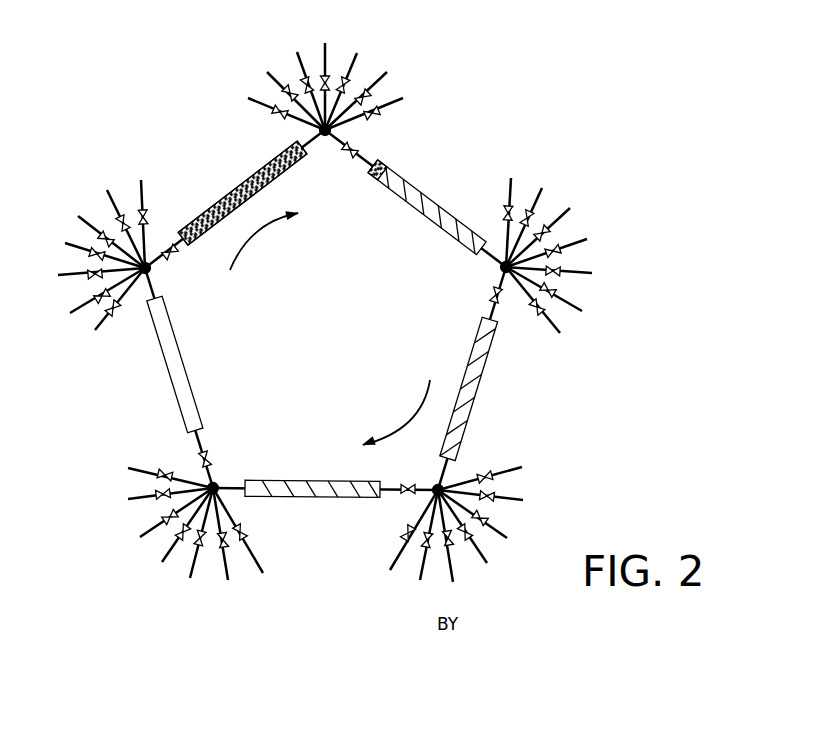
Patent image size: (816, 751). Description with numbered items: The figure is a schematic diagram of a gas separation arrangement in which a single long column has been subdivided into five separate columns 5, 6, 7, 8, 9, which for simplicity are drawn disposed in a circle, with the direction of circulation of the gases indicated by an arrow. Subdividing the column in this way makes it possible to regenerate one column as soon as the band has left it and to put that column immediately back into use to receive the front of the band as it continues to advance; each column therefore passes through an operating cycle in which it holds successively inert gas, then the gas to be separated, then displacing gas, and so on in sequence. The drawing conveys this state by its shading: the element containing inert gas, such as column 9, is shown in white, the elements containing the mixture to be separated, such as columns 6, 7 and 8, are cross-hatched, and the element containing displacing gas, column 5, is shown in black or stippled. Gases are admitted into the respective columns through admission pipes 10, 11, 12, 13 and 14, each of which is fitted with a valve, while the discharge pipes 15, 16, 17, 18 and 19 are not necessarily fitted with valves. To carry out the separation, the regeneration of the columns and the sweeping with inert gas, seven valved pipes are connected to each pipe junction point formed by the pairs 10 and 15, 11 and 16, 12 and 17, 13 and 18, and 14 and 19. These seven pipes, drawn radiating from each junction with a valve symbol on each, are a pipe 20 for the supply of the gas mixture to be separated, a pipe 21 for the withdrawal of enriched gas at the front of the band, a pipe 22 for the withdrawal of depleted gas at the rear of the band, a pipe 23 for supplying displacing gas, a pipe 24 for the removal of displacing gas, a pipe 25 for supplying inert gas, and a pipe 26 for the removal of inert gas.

The column 5 is at (248, 176).
The column 6 is at (418, 180).
The column 7 is at (478, 405).
The column 8 is at (316, 502).
The column 9 is at (168, 390).
The admission pipe 10 is at (174, 256).
The admission pipe 11 is at (351, 155).
The admission pipe 12 is at (490, 300).
The admission pipe 13 is at (408, 484).
The admission pipe 14 is at (207, 453).
The discharge pipe 15 is at (150, 272).
The discharge pipe 16 is at (325, 135).
The discharge pipe 17 is at (500, 268).
The discharge pipe 18 is at (438, 472).
The discharge pipe 19 is at (218, 486).
The pipe for the supply of the gas mixture to be separated 20 is at (257, 103).
The pipe for the withdrawal of enriched gas 21 is at (268, 77).
The pipe for the withdrawal of depleted gas 22 is at (303, 63).
The pipe for supplying displacing gas 23 is at (328, 70).
The pipe for the removal of displacing gas 24 is at (355, 65).
The pipe for supplying inert gas 25 is at (383, 82).
The pipe for the removal of inert gas 26 is at (393, 105).